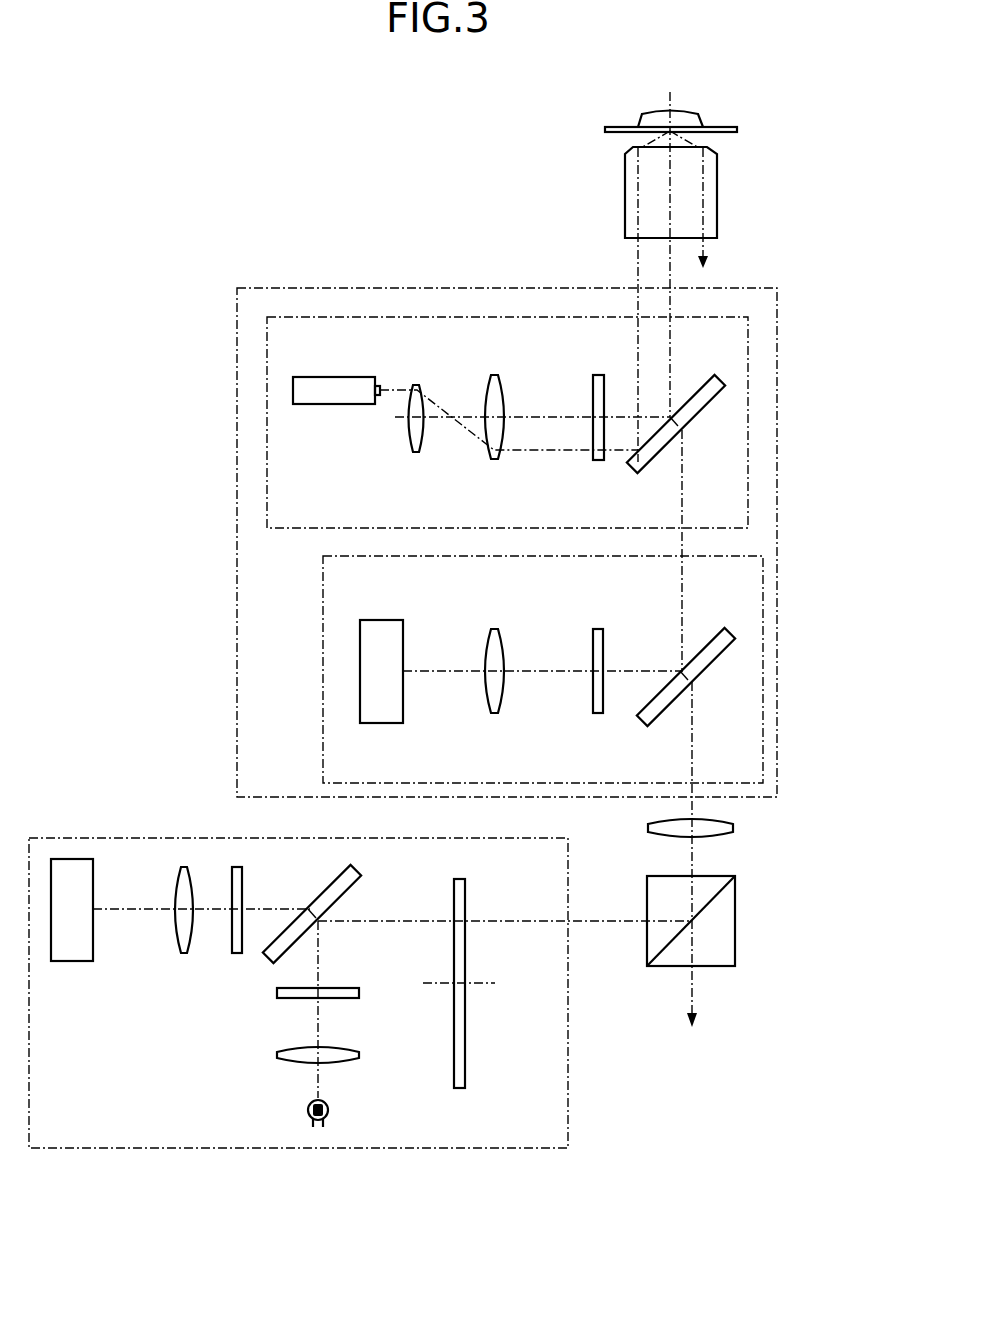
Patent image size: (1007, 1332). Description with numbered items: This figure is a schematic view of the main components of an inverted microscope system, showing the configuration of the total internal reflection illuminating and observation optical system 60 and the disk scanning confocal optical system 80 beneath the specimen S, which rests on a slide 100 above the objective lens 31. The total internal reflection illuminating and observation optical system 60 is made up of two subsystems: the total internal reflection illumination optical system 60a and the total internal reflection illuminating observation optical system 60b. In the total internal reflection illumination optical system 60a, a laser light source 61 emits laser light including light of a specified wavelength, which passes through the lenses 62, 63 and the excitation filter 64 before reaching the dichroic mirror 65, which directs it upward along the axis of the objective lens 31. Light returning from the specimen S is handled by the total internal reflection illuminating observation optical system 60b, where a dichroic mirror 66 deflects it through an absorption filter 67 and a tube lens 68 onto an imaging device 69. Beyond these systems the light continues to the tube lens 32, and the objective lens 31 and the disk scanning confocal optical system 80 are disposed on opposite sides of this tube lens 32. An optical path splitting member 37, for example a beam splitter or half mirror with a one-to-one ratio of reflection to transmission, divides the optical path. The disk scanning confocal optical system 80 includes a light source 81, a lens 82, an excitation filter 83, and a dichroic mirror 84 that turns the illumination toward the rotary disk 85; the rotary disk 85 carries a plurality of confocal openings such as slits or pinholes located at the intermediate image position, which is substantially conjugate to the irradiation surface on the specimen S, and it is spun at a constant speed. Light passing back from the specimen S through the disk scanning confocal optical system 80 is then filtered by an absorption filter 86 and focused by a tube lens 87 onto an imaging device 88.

The specimen S is at (687, 110).
The slide glass 100 is at (723, 128).
The objective lens 31 is at (718, 191).
The tube lens 32 is at (735, 828).
The optical path splitting member 37 is at (737, 921).
The total internal reflection illuminating and observation optical system 60 is at (237, 468).
The total internal reflection illumination optical system 60a is at (267, 383).
The total internal reflection illuminating observation optical system 60b is at (323, 667).
The laser light source 61 is at (331, 377).
The lens 62 is at (416, 385).
The lens 63 is at (494, 375).
The excitation filter 64 is at (598, 375).
The dichroic mirror 65 is at (709, 405).
The dichroic mirror 66 is at (708, 672).
The absorption filter 67 is at (598, 629).
The tube lens 68 is at (495, 629).
The imaging device 69 is at (381, 620).
The disk scanning confocal optical system 80 is at (84, 838).
The light source 81 is at (328, 1110).
The lens 82 is at (359, 1055).
The excitation filter 83 is at (359, 993).
The dichroic mirror 84 is at (360, 872).
The rotary disk 85 is at (465, 1056).
The absorption filter 86 is at (242, 878).
The tube lens 87 is at (184, 953).
The imaging device 88 is at (73, 961).